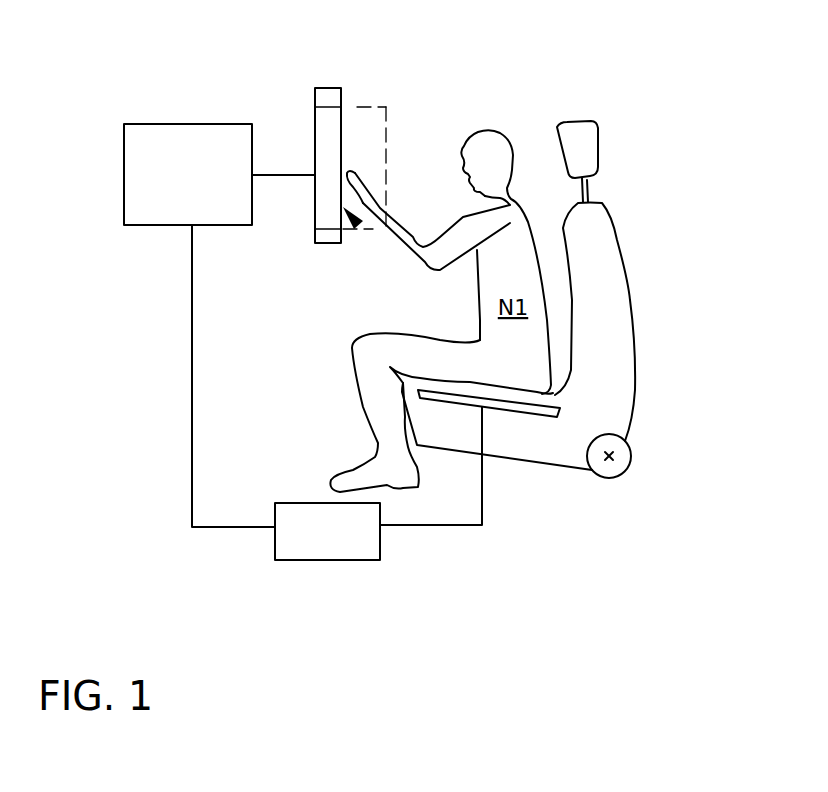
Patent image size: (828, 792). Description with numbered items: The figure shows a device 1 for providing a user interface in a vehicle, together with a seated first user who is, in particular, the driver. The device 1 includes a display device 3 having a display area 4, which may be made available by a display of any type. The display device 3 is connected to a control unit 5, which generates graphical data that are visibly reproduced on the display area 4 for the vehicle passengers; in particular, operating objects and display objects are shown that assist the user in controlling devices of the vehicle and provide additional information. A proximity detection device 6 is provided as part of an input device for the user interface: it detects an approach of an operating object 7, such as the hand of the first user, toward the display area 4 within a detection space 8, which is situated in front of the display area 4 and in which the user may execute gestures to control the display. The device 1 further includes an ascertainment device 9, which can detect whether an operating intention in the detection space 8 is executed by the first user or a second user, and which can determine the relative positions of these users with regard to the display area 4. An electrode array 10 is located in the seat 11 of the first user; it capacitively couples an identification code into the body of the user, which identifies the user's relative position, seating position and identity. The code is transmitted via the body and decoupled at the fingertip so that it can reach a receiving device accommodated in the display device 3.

The device 1 is at (134, 561).
The display device 3 is at (328, 127).
The display area 4 is at (358, 226).
The control unit 5 is at (219, 325).
The proximity detection device 6 is at (328, 97).
The operating object 7 is at (354, 173).
The detection space 8 is at (370, 127).
The ascertainment device 9 is at (327, 531).
The electrode array 10 is at (547, 410).
The seat 11 is at (610, 356).